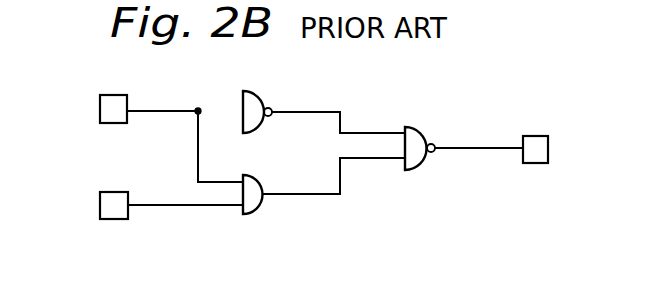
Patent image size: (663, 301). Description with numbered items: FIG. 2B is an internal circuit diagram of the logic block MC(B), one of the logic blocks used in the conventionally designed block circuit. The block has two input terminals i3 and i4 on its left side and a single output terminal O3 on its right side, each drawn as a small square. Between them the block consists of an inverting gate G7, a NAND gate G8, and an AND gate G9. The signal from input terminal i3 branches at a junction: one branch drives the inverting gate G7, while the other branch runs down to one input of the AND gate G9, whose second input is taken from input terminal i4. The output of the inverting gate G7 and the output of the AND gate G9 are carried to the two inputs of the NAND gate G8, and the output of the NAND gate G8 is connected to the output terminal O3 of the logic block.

The input terminal i3 is at (100, 111).
The input terminal i4 is at (99, 204).
The inverting gate G7 is at (262, 99).
The NAND gate G8 is at (426, 125).
The AND gate G9 is at (262, 205).
The output terminal O3 is at (548, 149).